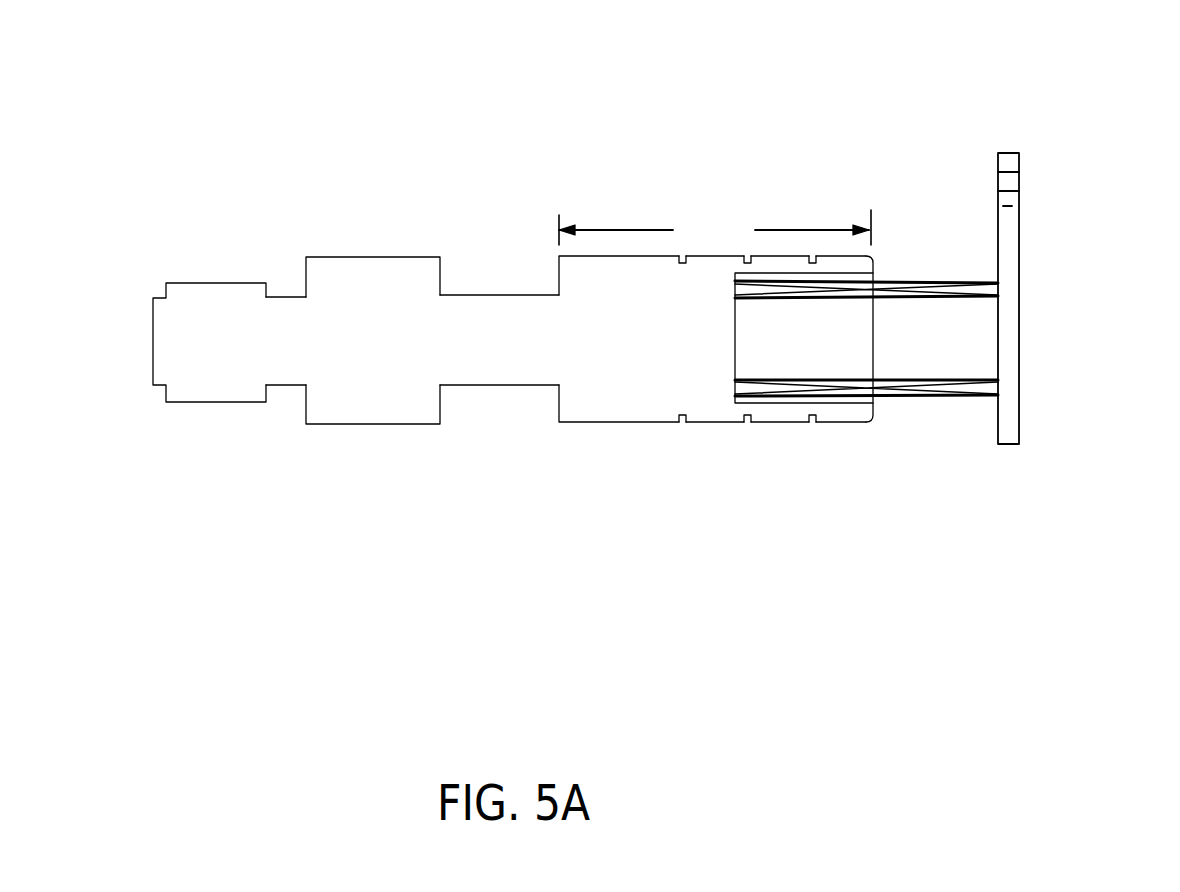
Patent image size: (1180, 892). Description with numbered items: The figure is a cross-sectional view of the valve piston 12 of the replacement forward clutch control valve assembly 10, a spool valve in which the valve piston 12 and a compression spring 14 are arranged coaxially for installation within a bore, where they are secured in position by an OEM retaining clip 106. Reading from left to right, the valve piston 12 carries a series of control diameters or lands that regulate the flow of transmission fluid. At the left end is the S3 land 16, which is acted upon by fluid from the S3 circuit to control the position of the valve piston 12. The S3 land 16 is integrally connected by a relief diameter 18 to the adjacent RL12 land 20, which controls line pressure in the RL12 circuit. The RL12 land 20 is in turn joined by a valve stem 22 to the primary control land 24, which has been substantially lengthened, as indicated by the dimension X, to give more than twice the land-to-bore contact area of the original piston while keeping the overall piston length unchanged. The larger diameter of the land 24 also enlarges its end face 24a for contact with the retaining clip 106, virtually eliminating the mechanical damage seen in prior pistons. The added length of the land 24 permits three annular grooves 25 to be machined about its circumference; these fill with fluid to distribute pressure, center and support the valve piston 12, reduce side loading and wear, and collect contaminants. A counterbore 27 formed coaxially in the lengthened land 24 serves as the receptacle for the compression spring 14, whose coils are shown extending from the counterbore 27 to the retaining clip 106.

The FCC valve assembly 10 is at (514, 145).
The valve piston 12 is at (536, 363).
The compression spring 14 is at (912, 398).
The S3 land 16 is at (197, 283).
The relief diameter 18 is at (284, 385).
The RL12 land 20 is at (375, 424).
The valve stem 22 is at (512, 385).
The primary control land 24 is at (617, 423).
The end face 24a is at (876, 412).
The annular grooves 25 is at (682, 423).
The counterbore 27 is at (850, 337).
The retaining clip 106 is at (1012, 322).